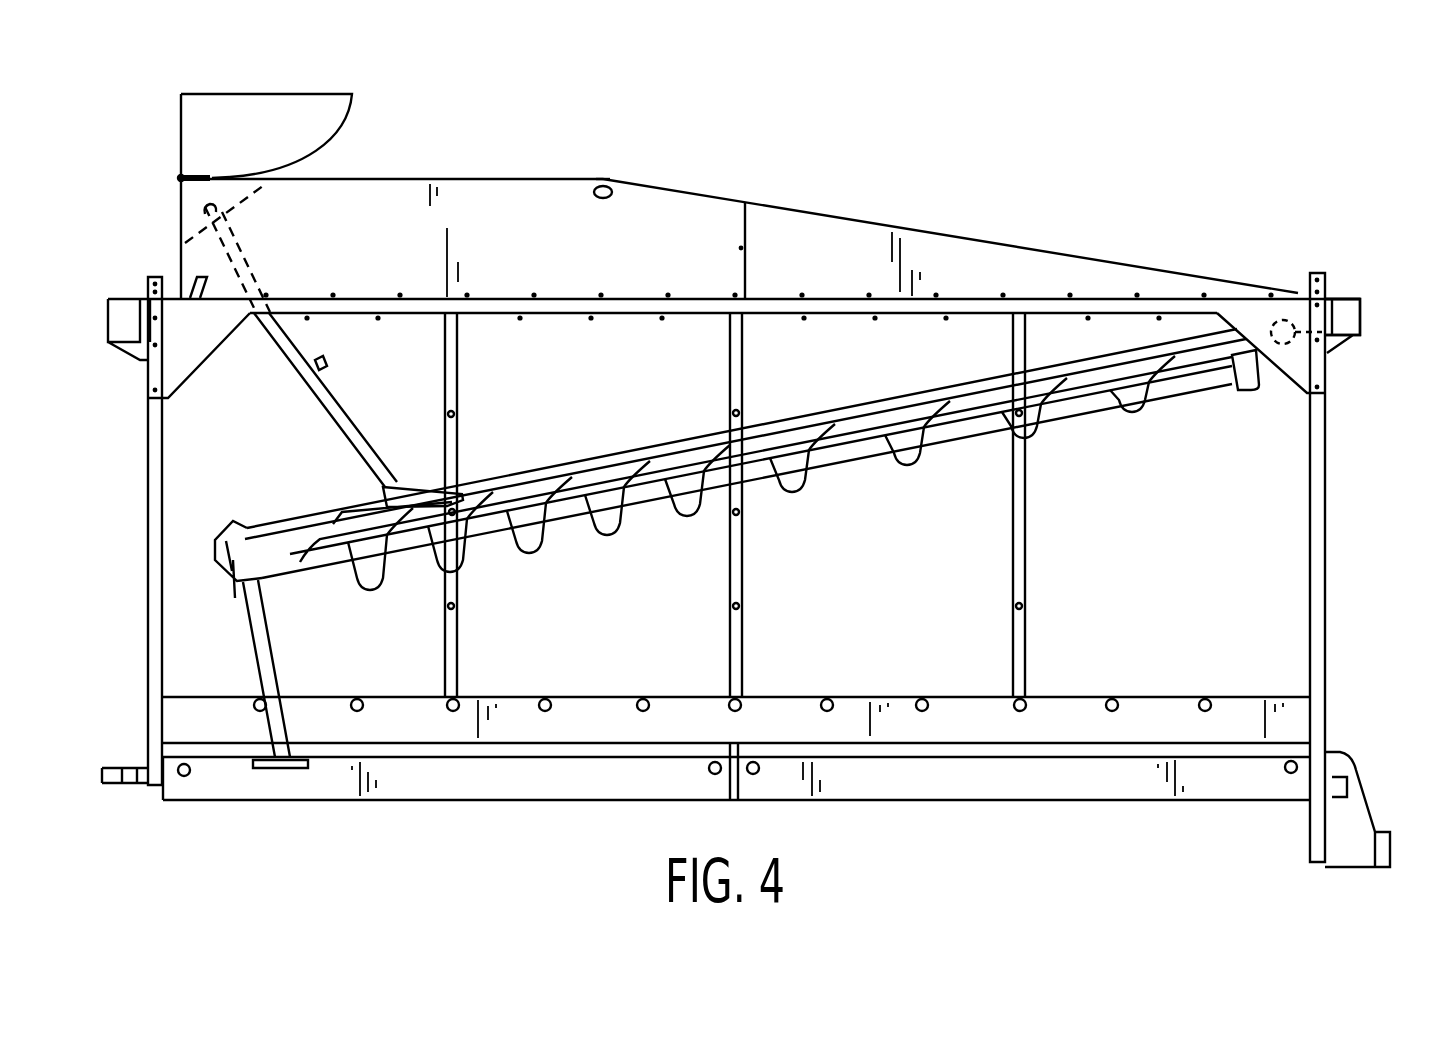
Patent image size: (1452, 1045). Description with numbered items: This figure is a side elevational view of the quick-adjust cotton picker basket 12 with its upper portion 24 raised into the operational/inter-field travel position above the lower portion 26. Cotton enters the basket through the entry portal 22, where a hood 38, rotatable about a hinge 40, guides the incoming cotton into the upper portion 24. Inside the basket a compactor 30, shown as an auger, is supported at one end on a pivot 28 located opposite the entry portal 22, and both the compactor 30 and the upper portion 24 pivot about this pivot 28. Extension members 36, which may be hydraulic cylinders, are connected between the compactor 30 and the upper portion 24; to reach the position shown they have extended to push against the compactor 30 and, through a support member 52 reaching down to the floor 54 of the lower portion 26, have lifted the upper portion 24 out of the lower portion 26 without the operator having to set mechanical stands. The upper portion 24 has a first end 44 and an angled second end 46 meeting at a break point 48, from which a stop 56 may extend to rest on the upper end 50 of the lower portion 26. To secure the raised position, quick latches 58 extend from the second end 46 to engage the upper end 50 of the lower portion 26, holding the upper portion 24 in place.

The quick-adjust cotton picker basket 12 is at (1080, 188).
The entry portal 22 is at (158, 245).
The upper portion 24 is at (370, 253).
The lower portion 26 is at (894, 591).
The pivot 28 is at (1340, 308).
The compactor 30 is at (735, 475).
The extension members 36 is at (357, 432).
The hood 38 is at (264, 136).
The hinge 40 is at (180, 178).
The first end 44 is at (1187, 262).
The second end 46 is at (229, 166).
The break point 48 is at (603, 170).
The upper end 50 is at (1372, 300).
The support member 52 is at (272, 663).
The floor 54 is at (504, 780).
The stop 56 is at (604, 200).
The quick latches 58 is at (200, 280).